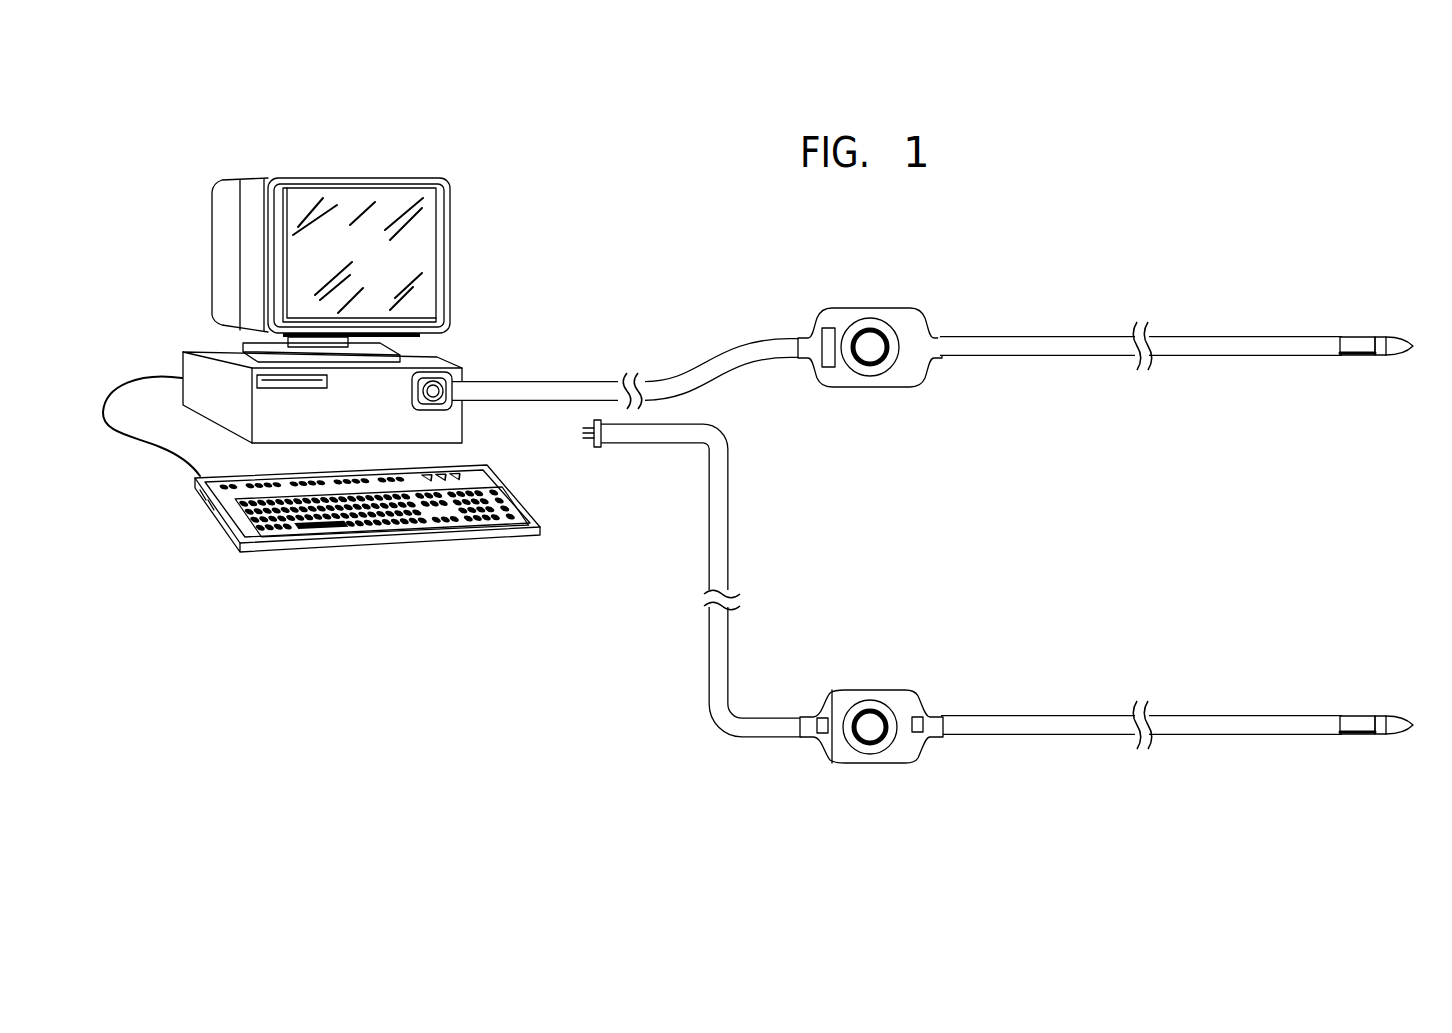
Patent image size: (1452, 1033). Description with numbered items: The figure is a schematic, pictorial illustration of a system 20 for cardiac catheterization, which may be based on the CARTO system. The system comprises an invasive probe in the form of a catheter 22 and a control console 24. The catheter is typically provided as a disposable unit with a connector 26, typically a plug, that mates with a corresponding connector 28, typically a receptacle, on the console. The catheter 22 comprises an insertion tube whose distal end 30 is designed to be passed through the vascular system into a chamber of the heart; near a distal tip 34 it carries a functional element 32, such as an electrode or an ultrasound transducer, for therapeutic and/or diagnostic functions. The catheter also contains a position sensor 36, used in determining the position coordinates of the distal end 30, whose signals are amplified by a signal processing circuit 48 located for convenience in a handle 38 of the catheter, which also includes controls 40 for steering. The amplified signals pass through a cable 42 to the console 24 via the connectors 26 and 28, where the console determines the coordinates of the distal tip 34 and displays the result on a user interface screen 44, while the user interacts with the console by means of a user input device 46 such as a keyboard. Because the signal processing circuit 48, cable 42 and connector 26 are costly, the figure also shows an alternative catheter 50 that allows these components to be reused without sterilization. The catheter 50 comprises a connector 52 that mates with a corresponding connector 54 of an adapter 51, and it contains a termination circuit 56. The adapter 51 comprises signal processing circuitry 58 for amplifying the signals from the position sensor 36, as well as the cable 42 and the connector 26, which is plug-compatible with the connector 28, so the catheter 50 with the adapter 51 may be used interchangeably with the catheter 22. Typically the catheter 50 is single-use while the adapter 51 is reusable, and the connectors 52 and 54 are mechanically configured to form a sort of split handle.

The system 20 is at (1148, 189).
The catheter 22 is at (1088, 336).
The control console 24 is at (190, 352).
The connector 26 is at (456, 380).
The connector 28 is at (438, 373).
The distal end 30 is at (1340, 358).
The functional element 32 is at (1390, 336).
The distal tip 34 is at (1413, 342).
The position sensor 36 is at (1345, 336).
The handle 38 is at (893, 308).
The controls 40 is at (878, 378).
The cable 42 is at (718, 360).
The user interface screen 44 is at (453, 228).
The user input device 46 is at (490, 478).
The signal processing circuit 48 is at (823, 328).
The alternative catheter 50 is at (1088, 716).
The adapter 51 is at (670, 663).
The connector 52 is at (895, 690).
The connector 54 is at (815, 752).
The termination circuit 56 is at (918, 740).
The signal processing circuitry 58 is at (822, 718).